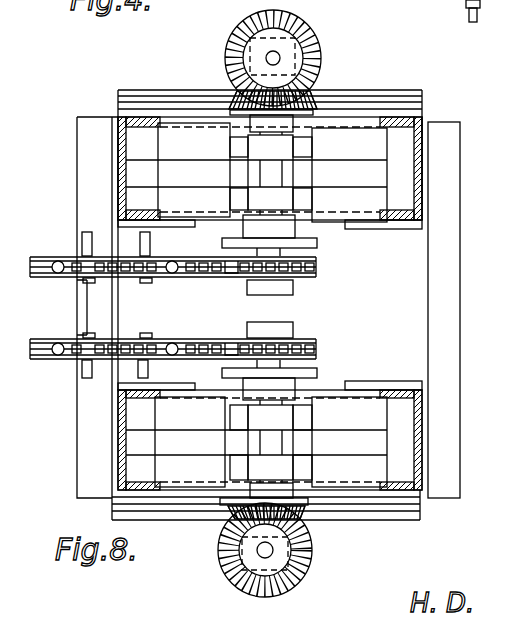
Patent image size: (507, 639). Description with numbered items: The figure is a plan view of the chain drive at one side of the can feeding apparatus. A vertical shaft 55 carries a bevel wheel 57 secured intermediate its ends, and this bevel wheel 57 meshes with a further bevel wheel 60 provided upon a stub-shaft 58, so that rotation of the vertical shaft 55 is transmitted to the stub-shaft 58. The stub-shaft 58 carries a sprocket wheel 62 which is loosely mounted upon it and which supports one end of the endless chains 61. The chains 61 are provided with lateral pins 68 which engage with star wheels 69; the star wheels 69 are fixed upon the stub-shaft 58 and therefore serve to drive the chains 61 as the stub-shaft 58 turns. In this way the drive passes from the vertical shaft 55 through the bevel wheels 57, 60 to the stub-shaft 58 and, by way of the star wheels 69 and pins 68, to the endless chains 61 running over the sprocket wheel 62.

The vertical shaft 55 is at (268, 55).
The bevel wheel 57 is at (302, 40).
The stub-shaft 58 is at (285, 170).
The bevel wheel 60 is at (237, 95).
The endless chain 61 is at (155, 347).
The sprocket wheel 62 is at (288, 328).
The lateral pin 68 is at (145, 238).
The star wheel 69 is at (313, 243).